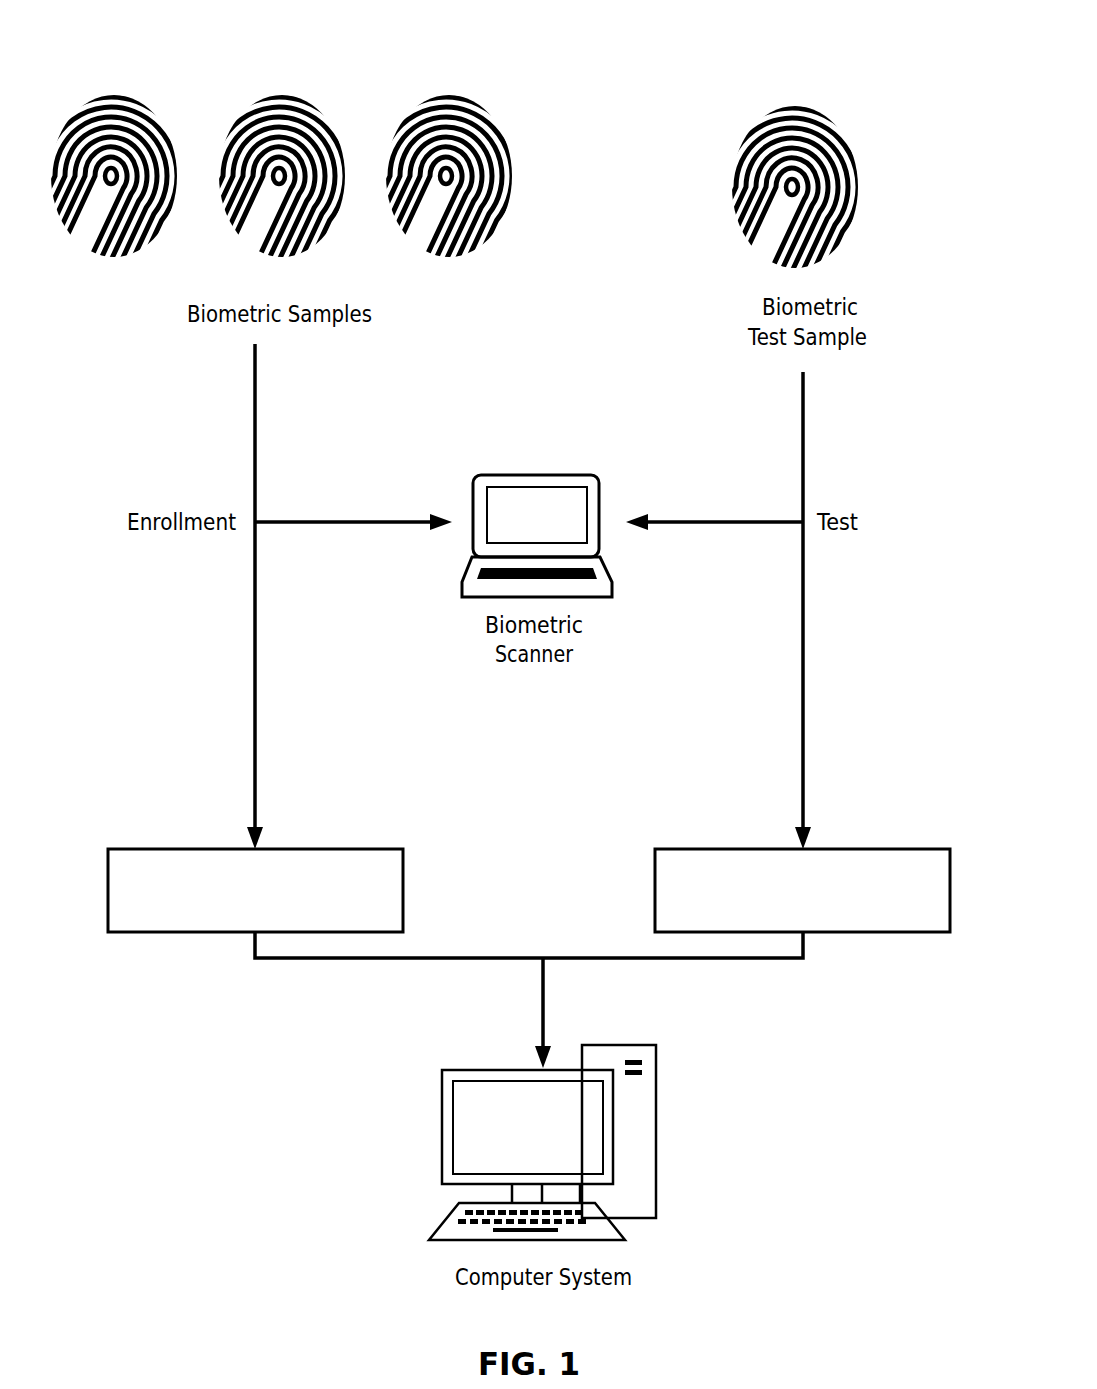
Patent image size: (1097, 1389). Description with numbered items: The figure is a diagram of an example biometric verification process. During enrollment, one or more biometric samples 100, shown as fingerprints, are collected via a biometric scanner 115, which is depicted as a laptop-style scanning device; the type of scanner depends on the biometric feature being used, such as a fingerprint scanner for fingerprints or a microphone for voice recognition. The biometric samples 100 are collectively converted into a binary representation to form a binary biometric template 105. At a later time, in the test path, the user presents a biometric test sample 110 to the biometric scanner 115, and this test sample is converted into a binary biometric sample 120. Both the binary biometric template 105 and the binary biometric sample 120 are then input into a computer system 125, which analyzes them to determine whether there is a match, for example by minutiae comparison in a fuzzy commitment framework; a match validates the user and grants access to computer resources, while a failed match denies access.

The biometric samples 100 is at (415, 100).
The binary biometric template 105 is at (273, 917).
The biometric test sample 110 is at (797, 97).
The biometric scanner 115 is at (572, 475).
The binary biometric sample 120 is at (822, 917).
The computer system 125 is at (657, 1098).